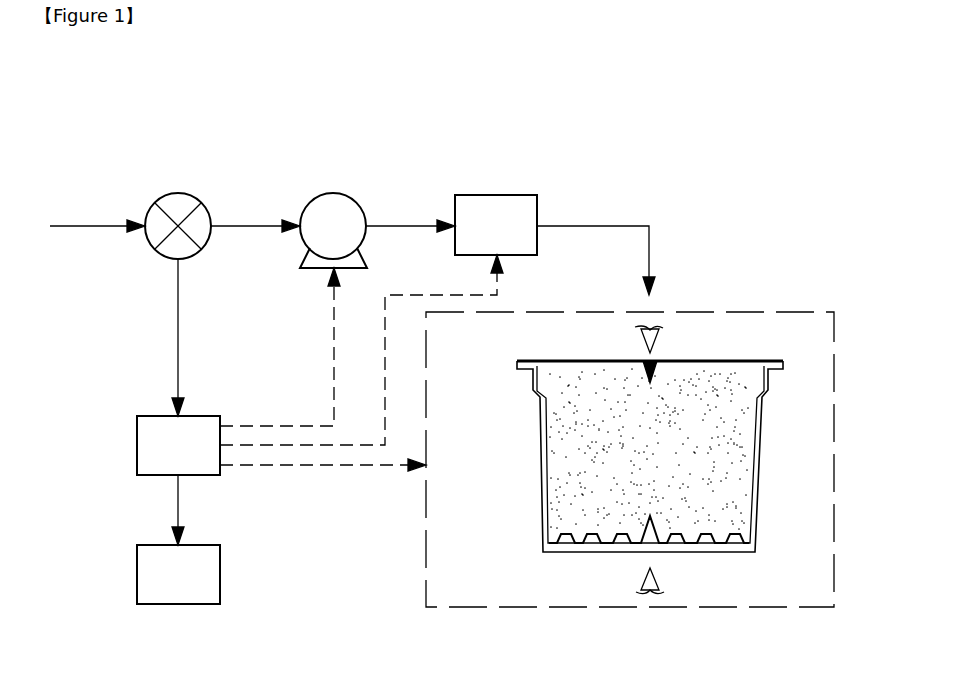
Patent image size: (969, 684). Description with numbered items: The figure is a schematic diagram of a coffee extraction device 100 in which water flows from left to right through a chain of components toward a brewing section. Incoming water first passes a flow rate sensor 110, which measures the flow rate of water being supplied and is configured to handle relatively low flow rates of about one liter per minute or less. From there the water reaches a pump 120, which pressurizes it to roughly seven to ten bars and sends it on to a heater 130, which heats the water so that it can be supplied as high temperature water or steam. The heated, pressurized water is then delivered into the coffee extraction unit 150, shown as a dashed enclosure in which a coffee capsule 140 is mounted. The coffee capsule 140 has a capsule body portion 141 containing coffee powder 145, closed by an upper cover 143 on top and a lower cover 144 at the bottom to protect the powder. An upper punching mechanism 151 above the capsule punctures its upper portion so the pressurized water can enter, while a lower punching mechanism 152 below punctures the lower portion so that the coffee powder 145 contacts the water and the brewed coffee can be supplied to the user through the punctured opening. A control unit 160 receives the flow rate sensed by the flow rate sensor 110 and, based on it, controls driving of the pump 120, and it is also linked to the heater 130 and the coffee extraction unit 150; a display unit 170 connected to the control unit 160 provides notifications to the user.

The coffee extraction device 100 is at (195, 83).
The flow rate sensor 110 is at (178, 193).
The pump 120 is at (333, 193).
The heater 130 is at (476, 195).
The coffee capsule 140 is at (510, 428).
The capsule body portion 141 is at (545, 509).
The upper cover 143 is at (715, 368).
The lower cover 144 is at (733, 538).
The coffee powder 145 is at (562, 452).
The coffee extraction unit 150 is at (778, 311).
The upper punching mechanism 151 is at (643, 343).
The lower punching mechanism 152 is at (643, 586).
The control unit 160 is at (137, 446).
The display unit 170 is at (220, 573).